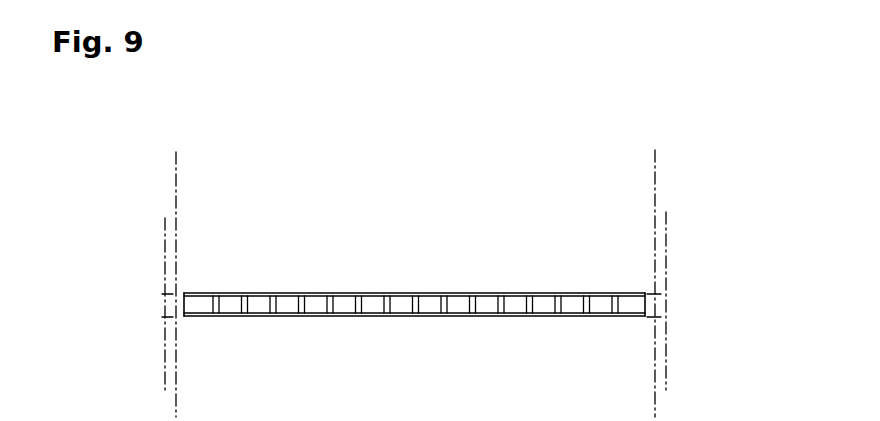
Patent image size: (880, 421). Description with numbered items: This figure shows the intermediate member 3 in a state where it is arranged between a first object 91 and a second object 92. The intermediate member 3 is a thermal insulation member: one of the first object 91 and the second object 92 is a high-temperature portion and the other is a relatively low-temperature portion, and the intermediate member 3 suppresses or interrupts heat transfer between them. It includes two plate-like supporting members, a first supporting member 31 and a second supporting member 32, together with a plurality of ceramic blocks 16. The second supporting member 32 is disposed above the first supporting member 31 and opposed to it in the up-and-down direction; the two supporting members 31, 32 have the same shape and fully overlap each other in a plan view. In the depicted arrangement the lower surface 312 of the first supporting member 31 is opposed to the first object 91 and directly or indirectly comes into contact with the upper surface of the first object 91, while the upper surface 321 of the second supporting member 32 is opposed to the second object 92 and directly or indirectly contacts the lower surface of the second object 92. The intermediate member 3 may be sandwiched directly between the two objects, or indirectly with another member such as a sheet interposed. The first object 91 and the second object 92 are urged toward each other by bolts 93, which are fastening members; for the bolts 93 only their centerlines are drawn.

The intermediate member 3 is at (414, 293).
The first supporting member 31 is at (414, 353).
The lower surface of the first supporting member 312 is at (262, 318).
The second supporting member 32 is at (414, 259).
The upper surface of the second supporting member 321 is at (260, 291).
The ceramic block 16 is at (375, 303).
The first object 91 is at (666, 347).
The second object 92 is at (666, 266).
The bolt 93 is at (176, 170).